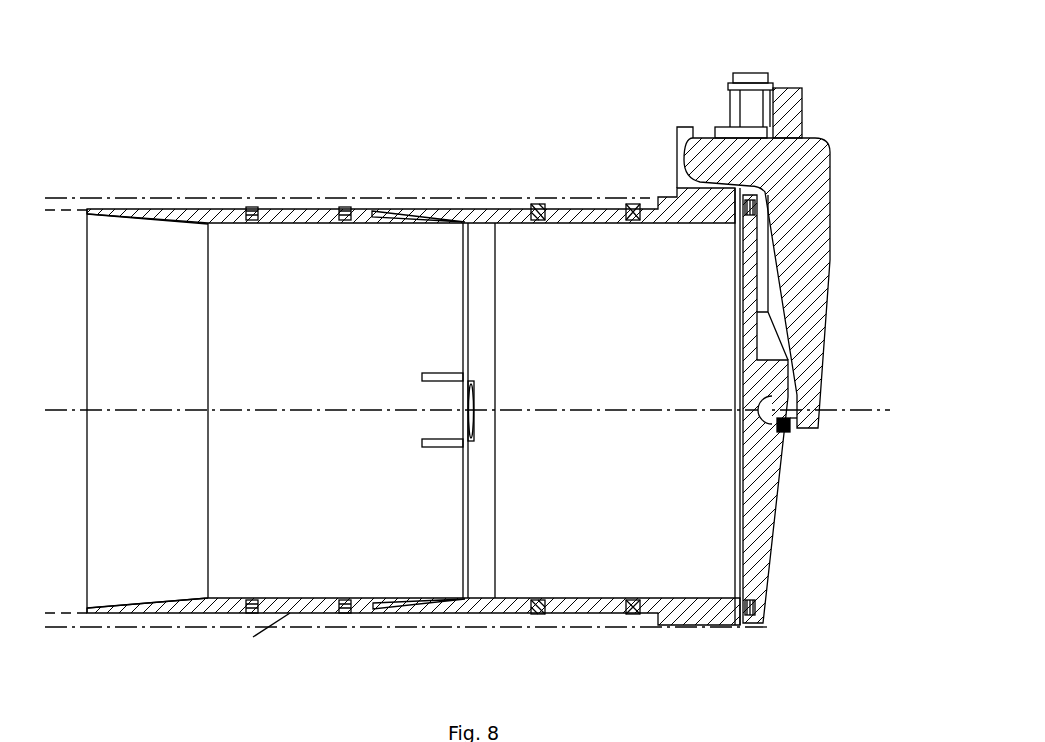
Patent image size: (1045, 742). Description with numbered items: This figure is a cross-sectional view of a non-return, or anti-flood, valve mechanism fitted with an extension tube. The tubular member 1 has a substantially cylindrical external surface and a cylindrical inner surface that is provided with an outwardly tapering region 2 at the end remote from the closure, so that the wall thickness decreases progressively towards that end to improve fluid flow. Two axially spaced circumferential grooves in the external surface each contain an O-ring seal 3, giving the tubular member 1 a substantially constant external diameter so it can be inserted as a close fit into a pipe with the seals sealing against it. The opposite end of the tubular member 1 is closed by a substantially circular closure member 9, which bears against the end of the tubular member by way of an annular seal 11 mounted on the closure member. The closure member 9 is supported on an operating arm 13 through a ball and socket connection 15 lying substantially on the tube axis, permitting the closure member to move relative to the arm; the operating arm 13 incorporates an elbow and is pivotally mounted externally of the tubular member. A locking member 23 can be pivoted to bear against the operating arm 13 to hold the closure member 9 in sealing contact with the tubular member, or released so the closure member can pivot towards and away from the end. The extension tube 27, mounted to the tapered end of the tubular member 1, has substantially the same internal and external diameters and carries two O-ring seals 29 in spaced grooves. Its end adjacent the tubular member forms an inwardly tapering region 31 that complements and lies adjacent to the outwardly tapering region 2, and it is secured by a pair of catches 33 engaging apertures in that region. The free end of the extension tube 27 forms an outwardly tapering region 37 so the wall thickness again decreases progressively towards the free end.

The tubular member 1 is at (491, 612).
The outwardly tapering region 2 is at (424, 603).
The O-ring seal 3 is at (537, 208).
The closure member 9 is at (790, 487).
The annular seal 11 is at (740, 612).
The operating arm 13 is at (830, 303).
The ball and socket connection 15 is at (790, 430).
The locking member 23 is at (803, 95).
The extension tube 27 is at (278, 209).
The O-ring seal 29 is at (250, 208).
The inwardly tapering region 31 is at (403, 226).
The catch 33 is at (447, 395).
The outwardly tapering region 37 is at (127, 210).